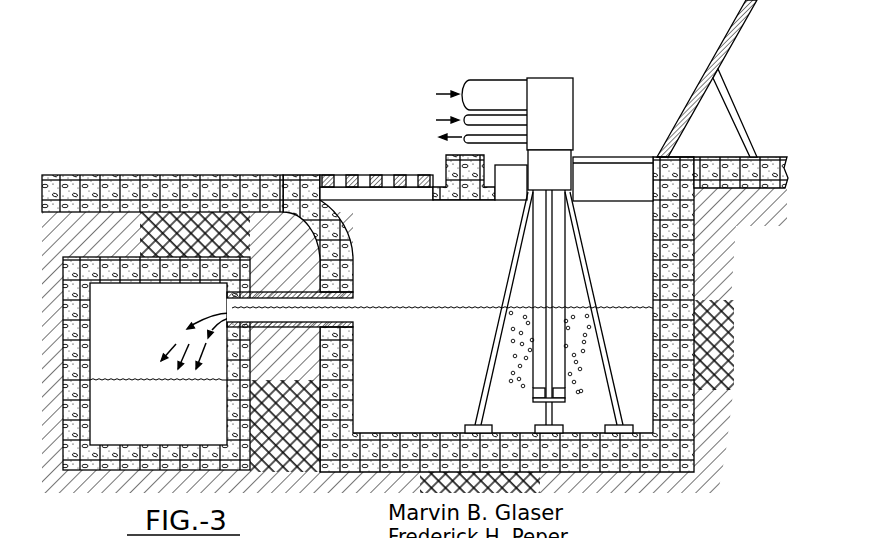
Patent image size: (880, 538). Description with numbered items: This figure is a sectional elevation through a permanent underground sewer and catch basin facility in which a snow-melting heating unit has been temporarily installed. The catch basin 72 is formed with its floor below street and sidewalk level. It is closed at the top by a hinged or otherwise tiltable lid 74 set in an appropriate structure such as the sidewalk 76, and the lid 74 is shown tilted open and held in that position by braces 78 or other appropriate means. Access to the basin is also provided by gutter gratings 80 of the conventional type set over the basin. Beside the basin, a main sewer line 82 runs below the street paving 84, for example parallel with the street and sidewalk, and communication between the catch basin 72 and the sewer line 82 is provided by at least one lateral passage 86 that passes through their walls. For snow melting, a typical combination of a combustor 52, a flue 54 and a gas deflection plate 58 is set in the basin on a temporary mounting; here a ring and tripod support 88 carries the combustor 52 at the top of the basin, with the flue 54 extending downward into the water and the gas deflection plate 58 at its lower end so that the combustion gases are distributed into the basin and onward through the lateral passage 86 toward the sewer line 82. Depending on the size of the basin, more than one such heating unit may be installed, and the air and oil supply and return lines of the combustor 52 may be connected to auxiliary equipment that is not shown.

The combustor 52 is at (573, 97).
The flue 54 is at (558, 280).
The gas deflection plate 58 is at (562, 401).
The catch basin 72 is at (447, 268).
The tiltable lid 74 is at (718, 51).
The sidewalk 76 is at (727, 159).
The braces 78 is at (728, 103).
The gutter gratings 80 is at (392, 177).
The main sewer line 82 is at (144, 337).
The street paving 84 is at (167, 183).
The lateral passage 86 is at (354, 295).
The ring and tripod support 88 is at (562, 179).